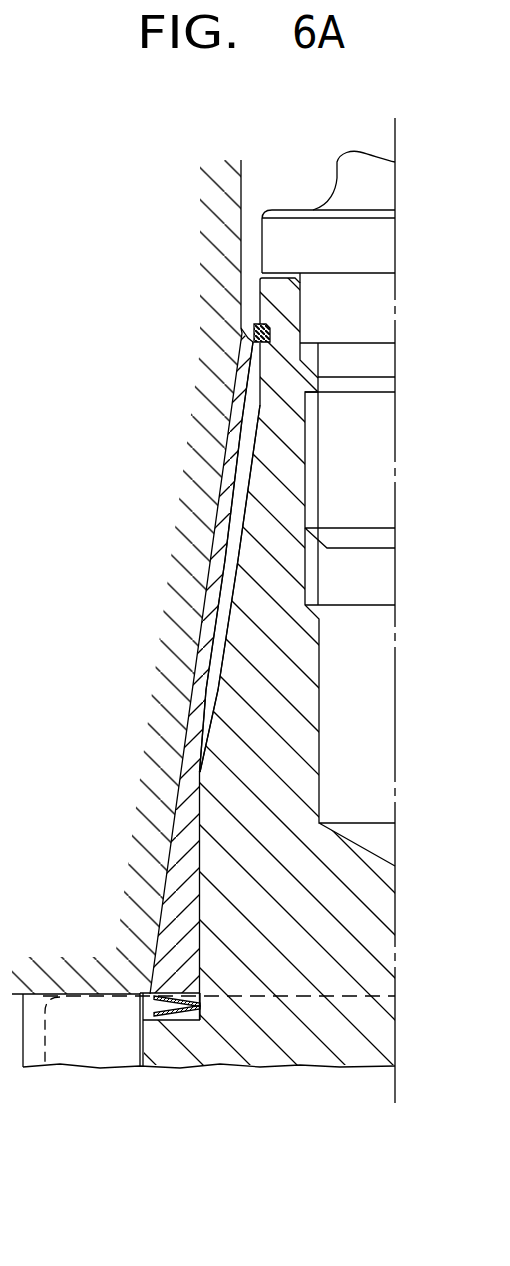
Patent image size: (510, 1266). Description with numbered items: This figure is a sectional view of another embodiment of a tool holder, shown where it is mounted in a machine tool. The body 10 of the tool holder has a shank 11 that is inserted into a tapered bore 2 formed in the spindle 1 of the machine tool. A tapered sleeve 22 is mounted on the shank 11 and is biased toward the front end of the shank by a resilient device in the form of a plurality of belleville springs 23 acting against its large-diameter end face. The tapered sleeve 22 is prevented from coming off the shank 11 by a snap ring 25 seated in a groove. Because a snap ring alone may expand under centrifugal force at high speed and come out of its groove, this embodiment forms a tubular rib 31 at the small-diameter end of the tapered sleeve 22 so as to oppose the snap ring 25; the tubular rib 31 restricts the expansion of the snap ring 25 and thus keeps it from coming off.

The spindle 1 is at (165, 698).
The tapered bore 2 is at (198, 636).
The tapered sleeve 22 is at (232, 482).
The snap ring 25 is at (252, 328).
The tubular rib 31 is at (250, 344).
The shank 11 is at (286, 694).
The body 10 is at (400, 1025).
The belleville springs 23 is at (188, 1022).